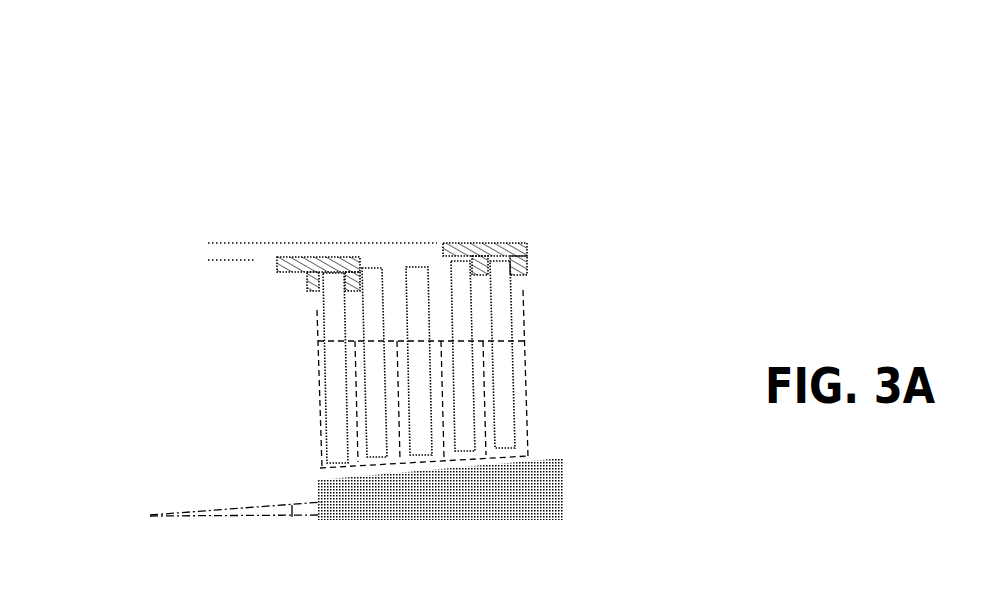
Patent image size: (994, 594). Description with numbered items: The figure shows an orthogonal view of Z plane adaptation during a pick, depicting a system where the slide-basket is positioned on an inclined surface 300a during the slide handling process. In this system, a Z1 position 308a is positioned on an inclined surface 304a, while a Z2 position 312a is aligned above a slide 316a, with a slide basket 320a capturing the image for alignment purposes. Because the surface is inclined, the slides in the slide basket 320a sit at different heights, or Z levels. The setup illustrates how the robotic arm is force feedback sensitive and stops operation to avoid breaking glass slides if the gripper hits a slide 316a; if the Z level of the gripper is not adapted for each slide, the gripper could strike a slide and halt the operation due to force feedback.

The system where the slide-basket is positioned on an inclined surface 300a is at (176, 95).
The inclined surface 304a is at (212, 512).
The Z1 position 308a is at (248, 243).
The Z2 position 312a is at (246, 262).
The slide 316a is at (518, 312).
The slide basket 320a is at (528, 417).